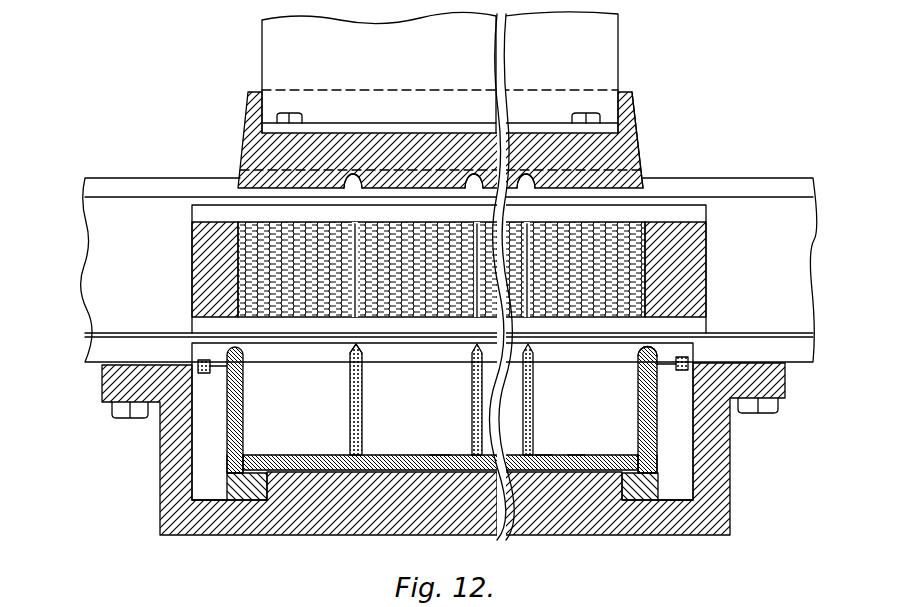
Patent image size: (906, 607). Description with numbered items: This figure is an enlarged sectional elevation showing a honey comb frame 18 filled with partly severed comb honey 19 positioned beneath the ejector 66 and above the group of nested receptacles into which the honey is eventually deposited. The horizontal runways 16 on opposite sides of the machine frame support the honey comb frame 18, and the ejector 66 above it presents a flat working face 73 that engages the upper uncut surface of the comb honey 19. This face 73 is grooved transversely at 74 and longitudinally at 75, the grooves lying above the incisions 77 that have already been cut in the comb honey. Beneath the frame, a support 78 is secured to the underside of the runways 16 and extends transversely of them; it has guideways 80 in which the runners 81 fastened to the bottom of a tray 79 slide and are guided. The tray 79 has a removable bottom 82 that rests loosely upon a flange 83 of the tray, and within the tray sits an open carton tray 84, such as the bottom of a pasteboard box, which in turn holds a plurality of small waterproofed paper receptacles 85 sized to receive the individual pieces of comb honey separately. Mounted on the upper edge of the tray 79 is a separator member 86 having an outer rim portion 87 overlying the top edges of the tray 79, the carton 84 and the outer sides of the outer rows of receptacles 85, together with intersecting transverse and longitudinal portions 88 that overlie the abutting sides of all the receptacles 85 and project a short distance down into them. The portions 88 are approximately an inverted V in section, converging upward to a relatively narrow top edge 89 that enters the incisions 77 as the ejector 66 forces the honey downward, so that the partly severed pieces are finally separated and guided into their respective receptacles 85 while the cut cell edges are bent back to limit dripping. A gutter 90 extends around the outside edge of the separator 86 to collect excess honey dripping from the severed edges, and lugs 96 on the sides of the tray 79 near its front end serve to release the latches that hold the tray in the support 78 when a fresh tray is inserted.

The horizontal runways 16 is at (108, 303).
The honey comb frame 18 is at (680, 270).
The comb honey 19 is at (240, 260).
The ejector 66 is at (622, 130).
The flat working face 73 is at (640, 188).
The transverse grooves 74 is at (240, 168).
The longitudinal grooves 75 is at (522, 178).
The incisions 77 is at (530, 262).
The support 78 is at (318, 520).
The tray 79 is at (230, 432).
The guideways 80 is at (673, 500).
The runners 81 is at (636, 500).
The removable bottom 82 is at (575, 462).
The flange 83 is at (621, 478).
The open carton tray 84 is at (397, 465).
The small receptacles 85 is at (543, 462).
The separator member 86 is at (442, 408).
The outer rim portion 87 is at (655, 345).
The intersecting transverse and longitudinal portions 88 is at (564, 350).
The narrow top edge 89 is at (353, 352).
The gutter 90 is at (675, 373).
The lugs 96 is at (683, 485).